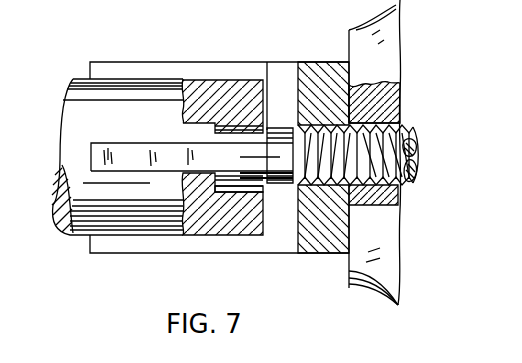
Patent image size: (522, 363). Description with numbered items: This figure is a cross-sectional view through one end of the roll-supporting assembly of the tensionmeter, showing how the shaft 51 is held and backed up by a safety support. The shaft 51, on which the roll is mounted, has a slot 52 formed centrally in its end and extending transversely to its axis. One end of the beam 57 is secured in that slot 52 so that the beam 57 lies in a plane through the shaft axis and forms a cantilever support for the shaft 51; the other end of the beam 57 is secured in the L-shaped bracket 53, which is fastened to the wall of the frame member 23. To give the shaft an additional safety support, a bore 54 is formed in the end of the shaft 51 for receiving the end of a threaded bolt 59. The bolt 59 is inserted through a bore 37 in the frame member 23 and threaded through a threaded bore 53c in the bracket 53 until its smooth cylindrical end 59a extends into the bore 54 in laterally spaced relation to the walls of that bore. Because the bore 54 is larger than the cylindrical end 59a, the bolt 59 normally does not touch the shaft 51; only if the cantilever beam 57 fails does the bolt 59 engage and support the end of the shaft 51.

The frame member 23 is at (378, 32).
The bore 37 is at (398, 190).
The shaft 51 is at (153, 80).
The slot 52 is at (109, 147).
The bracket 53 is at (212, 62).
The threaded bore 53c is at (333, 120).
The bore 54 is at (262, 190).
The beam 57 is at (152, 147).
The threaded bolt 59 is at (415, 175).
The smooth cylindrical end 59a is at (275, 137).